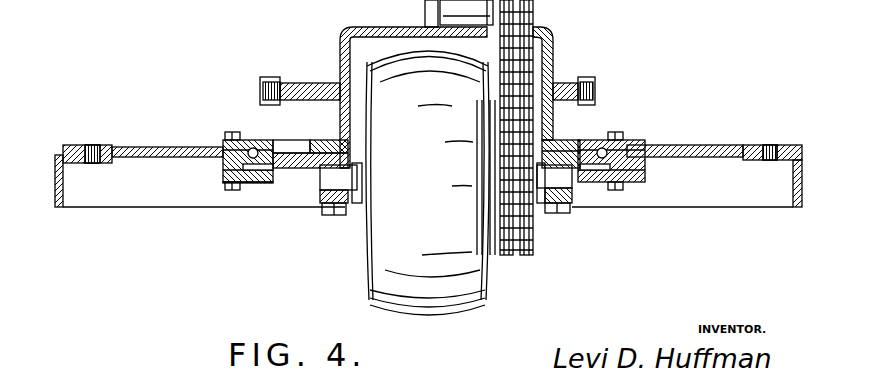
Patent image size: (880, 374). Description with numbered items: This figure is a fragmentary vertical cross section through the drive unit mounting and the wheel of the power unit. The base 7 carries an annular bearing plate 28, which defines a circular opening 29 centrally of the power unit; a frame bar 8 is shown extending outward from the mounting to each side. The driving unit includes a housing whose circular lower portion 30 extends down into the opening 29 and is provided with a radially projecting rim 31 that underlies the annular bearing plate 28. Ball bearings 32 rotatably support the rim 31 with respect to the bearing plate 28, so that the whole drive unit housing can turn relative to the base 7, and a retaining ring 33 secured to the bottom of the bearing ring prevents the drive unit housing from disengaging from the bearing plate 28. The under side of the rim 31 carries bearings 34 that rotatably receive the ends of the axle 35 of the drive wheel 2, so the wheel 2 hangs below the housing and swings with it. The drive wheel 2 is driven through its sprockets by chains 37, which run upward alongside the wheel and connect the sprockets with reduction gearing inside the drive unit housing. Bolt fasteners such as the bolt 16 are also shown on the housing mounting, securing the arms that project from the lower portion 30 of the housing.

The drive wheel 2 is at (372, 271).
The base 7 is at (56, 197).
The frame bar 8 is at (118, 146).
The bolt 16 is at (587, 79).
The annular bearing plate 28 is at (253, 140).
The circular opening 29 is at (292, 143).
The circular lower portion 30 is at (340, 58).
The radially projecting rim 31 is at (303, 165).
The ball bearings 32 is at (223, 164).
The retaining ring 33 is at (222, 184).
The bearings 34 is at (320, 203).
The axle 35 is at (347, 190).
The chains 37 is at (526, 258).